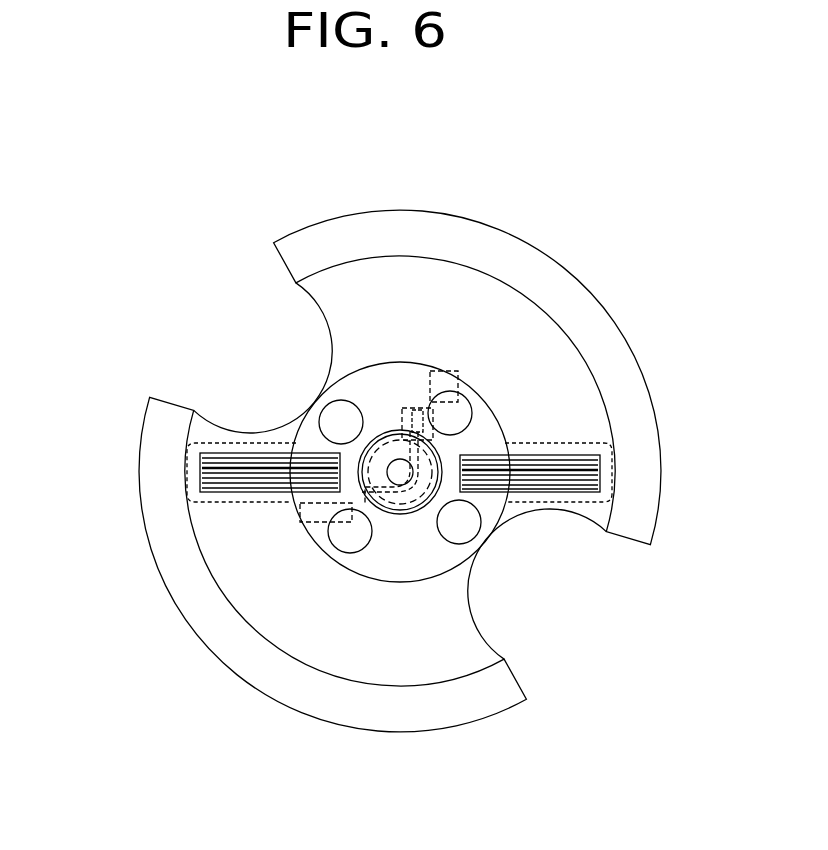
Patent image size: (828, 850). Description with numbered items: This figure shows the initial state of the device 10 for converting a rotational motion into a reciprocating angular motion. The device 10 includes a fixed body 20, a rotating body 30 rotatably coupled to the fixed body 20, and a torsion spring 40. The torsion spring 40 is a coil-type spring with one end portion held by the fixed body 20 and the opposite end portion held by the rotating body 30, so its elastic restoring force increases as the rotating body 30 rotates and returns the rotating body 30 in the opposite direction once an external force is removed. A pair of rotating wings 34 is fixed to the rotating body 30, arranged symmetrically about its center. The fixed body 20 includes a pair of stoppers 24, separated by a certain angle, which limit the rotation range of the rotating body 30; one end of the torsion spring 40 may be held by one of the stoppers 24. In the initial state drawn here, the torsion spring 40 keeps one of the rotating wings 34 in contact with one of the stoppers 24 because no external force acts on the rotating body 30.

The device 10 is at (581, 226).
The fixed body 20 is at (384, 286).
The stoppers 24 is at (443, 378).
The rotating body 30 is at (493, 555).
The rotating wings 34 is at (239, 455).
The torsion spring 40 is at (416, 406).